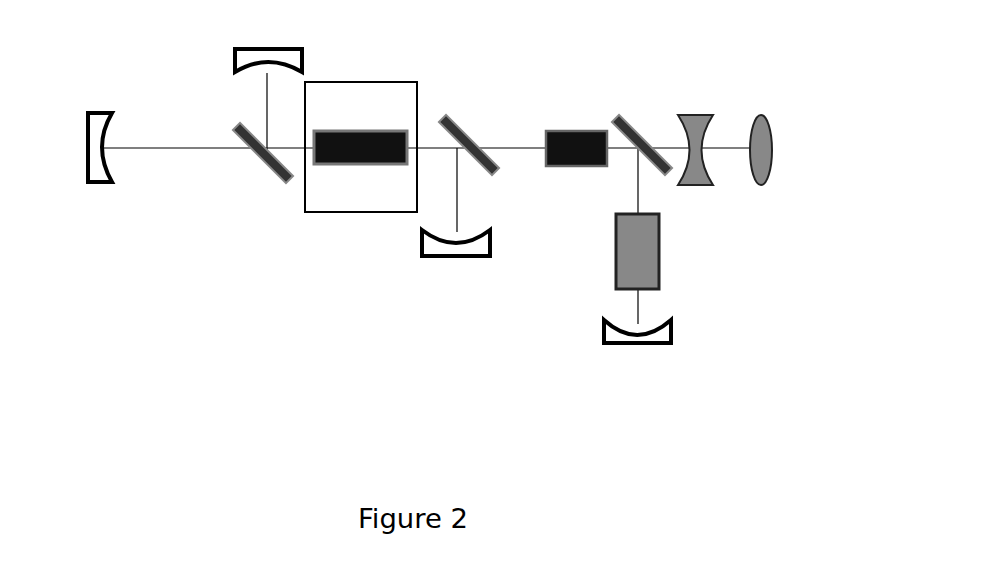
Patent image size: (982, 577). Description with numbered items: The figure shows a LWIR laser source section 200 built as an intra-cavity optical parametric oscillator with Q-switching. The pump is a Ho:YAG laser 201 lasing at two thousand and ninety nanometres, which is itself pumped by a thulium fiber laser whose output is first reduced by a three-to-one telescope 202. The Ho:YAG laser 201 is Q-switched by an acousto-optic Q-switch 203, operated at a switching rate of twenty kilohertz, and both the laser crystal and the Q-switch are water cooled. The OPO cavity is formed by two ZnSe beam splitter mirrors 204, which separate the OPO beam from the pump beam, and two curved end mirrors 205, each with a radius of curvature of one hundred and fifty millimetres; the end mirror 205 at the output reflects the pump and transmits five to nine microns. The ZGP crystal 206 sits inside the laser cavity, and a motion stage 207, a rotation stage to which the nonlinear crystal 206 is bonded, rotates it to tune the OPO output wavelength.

The LWIR laser source section 200 is at (188, 299).
The Ho:YAG laser 201 is at (585, 122).
The telescope 202 is at (740, 107).
The acousto-optic Q-switch 203 is at (670, 278).
The ZnSe beam splitter mirrors 204 is at (258, 177).
The curved end mirrors 205 is at (73, 163).
The ZGP crystal 206 is at (348, 167).
The motion stage 207 is at (390, 82).